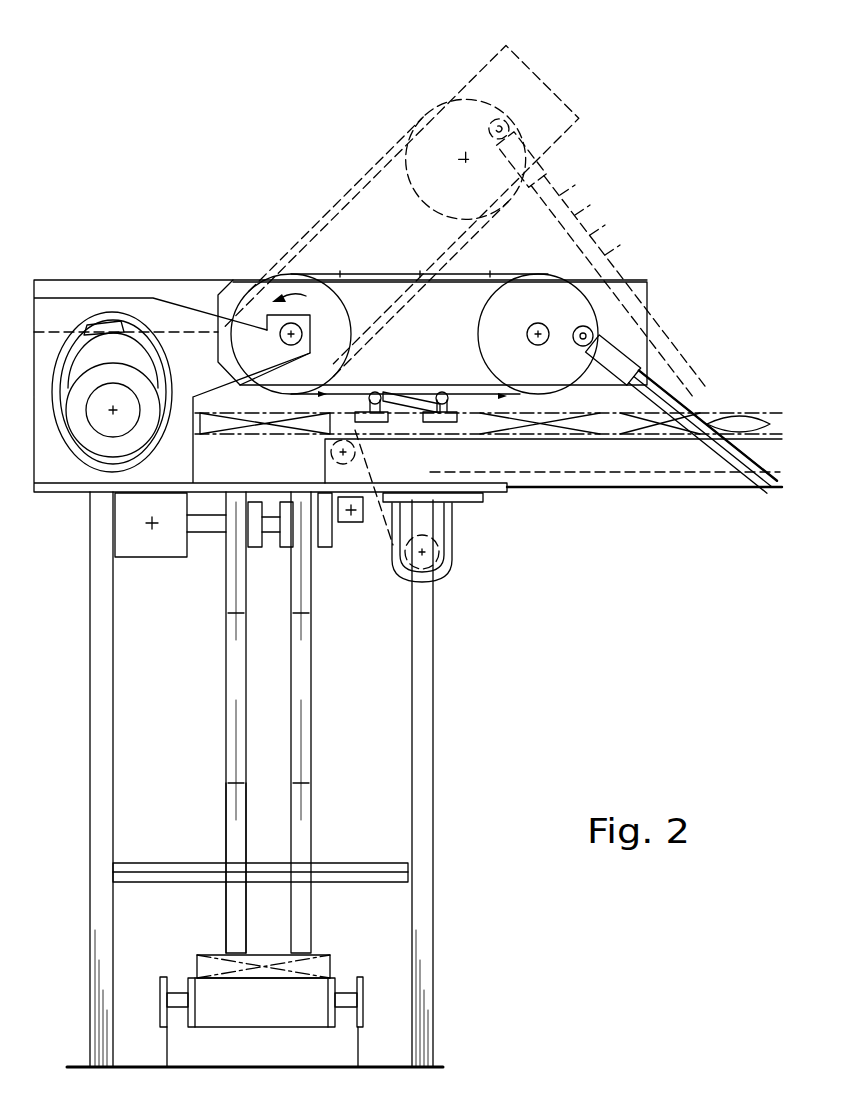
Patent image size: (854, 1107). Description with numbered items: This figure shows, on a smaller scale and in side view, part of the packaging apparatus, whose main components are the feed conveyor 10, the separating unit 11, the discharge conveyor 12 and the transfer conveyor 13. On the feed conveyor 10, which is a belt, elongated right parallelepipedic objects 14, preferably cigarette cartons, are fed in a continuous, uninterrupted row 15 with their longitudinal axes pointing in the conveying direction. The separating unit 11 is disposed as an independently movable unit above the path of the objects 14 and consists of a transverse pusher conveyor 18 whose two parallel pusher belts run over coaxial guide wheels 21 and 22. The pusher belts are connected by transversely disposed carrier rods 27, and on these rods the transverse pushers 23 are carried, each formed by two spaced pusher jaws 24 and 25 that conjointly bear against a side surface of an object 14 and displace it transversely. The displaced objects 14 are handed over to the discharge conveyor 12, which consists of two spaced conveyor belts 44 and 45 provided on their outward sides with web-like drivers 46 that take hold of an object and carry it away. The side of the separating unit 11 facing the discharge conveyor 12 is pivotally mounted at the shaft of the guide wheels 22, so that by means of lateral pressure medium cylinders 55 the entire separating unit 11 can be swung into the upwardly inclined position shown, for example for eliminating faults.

The feed conveyor 10 is at (631, 465).
The separating unit 11 is at (246, 218).
The discharge conveyor 12 is at (336, 693).
The transfer conveyor 13 is at (290, 1034).
The objects 14 is at (212, 420).
The row 15 is at (740, 340).
The transverse pusher conveyor 18 is at (481, 270).
The guide wheels 21 is at (563, 288).
The guide wheels 22 is at (346, 290).
The transverse pusher 23 is at (431, 421).
The pusher jaw 24 is at (446, 410).
The pusher jaw 25 is at (366, 419).
The carrier rods 27 is at (432, 393).
The conveyor belt 44 is at (305, 758).
The conveyor belt 45 is at (238, 820).
The drivers 46 is at (233, 616).
The pressure medium cylinders 55 is at (686, 350).